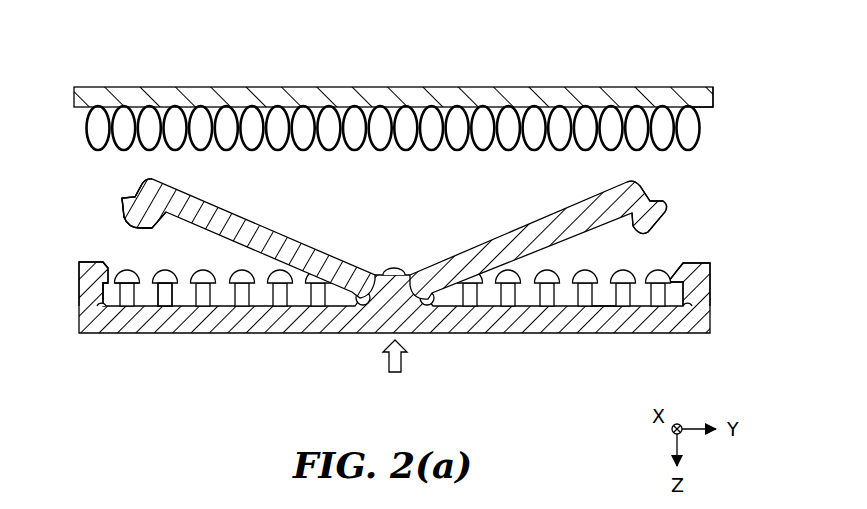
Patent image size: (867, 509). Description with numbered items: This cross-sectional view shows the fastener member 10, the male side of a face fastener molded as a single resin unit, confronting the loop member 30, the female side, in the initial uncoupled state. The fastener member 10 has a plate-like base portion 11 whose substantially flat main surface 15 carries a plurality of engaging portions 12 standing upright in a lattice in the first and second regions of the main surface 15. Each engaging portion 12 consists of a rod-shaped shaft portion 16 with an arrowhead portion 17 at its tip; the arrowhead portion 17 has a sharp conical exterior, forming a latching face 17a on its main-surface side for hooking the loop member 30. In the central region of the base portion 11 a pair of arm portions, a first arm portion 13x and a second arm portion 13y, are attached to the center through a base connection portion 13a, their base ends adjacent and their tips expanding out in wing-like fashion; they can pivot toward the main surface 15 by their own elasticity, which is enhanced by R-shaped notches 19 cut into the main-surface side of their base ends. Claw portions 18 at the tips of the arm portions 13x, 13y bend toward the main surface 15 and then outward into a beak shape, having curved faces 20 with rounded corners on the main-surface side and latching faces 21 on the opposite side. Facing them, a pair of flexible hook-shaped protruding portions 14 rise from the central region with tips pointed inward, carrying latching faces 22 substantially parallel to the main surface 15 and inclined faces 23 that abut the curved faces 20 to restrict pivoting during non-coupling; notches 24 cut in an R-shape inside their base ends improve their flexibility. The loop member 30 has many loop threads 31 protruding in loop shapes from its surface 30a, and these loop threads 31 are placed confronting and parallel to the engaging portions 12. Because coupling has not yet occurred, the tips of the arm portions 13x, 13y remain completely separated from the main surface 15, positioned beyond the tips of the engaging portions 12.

The fastener member 10 is at (393, 289).
The base portion 11 is at (253, 340).
The engaging portions 12 is at (393, 273).
The first arm portion 13x is at (291, 230).
The second arm portion 13y is at (509, 238).
The base connection portion 13a is at (392, 270).
The hook-shaped protruding portions 14 is at (74, 295).
The main surface 15 is at (607, 302).
The shaft portion 16 is at (165, 296).
The arrowhead portion 17 is at (148, 270).
The latching face 17a is at (178, 281).
The claw portions 18 is at (116, 196).
The notches 19 is at (362, 306).
The curved faces 20 is at (121, 204).
The latching faces 21 is at (133, 196).
The latching faces 22 is at (103, 290).
The inclined faces 23 is at (104, 262).
The notches 24 is at (104, 312).
The loop member 30 is at (146, 82).
The surface 30a is at (713, 107).
The loop threads 31 is at (87, 128).